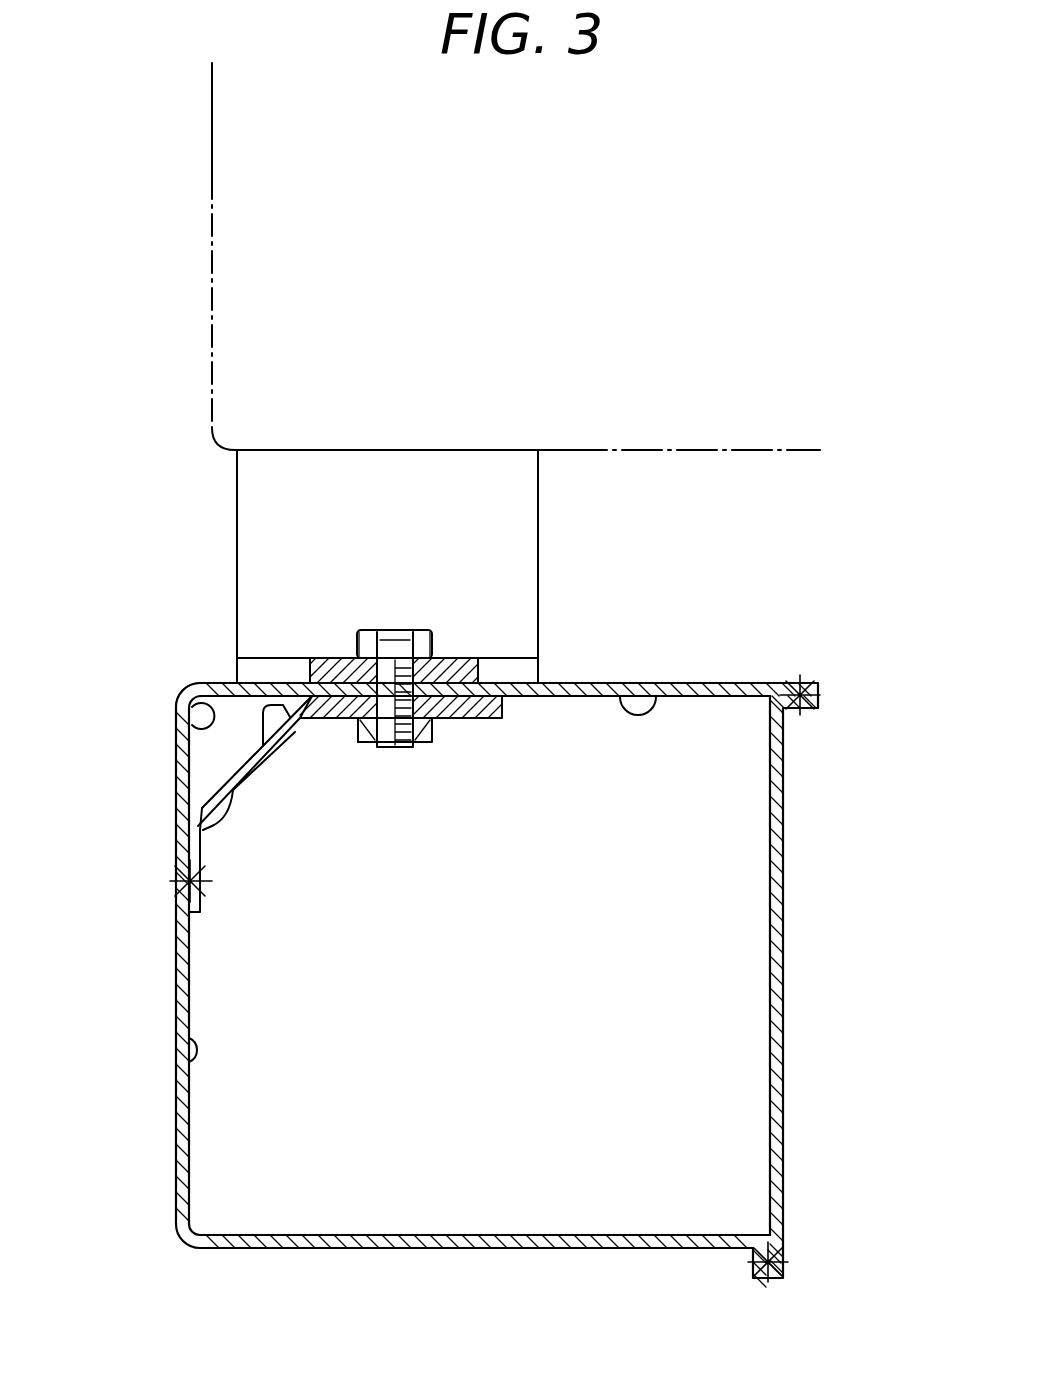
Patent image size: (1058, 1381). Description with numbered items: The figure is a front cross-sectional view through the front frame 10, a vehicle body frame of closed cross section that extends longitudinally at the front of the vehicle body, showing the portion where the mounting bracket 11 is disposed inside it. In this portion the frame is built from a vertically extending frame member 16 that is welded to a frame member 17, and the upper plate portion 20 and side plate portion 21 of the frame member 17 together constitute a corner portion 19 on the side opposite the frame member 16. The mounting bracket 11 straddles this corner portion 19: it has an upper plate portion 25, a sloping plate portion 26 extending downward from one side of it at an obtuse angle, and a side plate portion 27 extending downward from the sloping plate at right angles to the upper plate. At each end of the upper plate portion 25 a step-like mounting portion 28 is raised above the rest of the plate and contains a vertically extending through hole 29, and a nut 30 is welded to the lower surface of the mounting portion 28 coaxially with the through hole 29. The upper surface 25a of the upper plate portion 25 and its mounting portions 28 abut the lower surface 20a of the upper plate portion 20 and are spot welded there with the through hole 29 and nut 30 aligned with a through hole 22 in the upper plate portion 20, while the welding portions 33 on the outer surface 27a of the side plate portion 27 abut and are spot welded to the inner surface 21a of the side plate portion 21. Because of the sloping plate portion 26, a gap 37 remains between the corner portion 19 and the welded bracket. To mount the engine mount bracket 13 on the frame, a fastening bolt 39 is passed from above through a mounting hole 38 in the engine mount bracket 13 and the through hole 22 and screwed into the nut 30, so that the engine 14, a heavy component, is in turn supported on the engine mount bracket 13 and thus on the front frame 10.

The front frame 10 is at (752, 665).
The mounting bracket 11 is at (264, 782).
The engine mount bracket 13 is at (237, 598).
The engine 14 is at (212, 165).
The frame member 16 is at (783, 957).
The frame member 17 is at (446, 1250).
The corner portion 19 is at (178, 730).
The upper plate portion 20 is at (573, 683).
The lower surface 20a is at (660, 700).
The side plate portion 21 is at (176, 1012).
The inner surface 21a is at (178, 1068).
The through hole 22 is at (392, 652).
The upper plate portion 25 is at (468, 720).
The upper surface 25a is at (337, 665).
The sloping plate portion 26 is at (270, 770).
The side plate portion 27 is at (195, 805).
The outer surface 27a is at (178, 850).
The mounting portion 28 is at (480, 683).
The through hole 29 is at (402, 748).
The nut 30 is at (365, 745).
The welding portion 33 is at (203, 896).
The gap 37 is at (212, 683).
The mounting hole 38 is at (368, 656).
The fastening bolt 39 is at (388, 638).